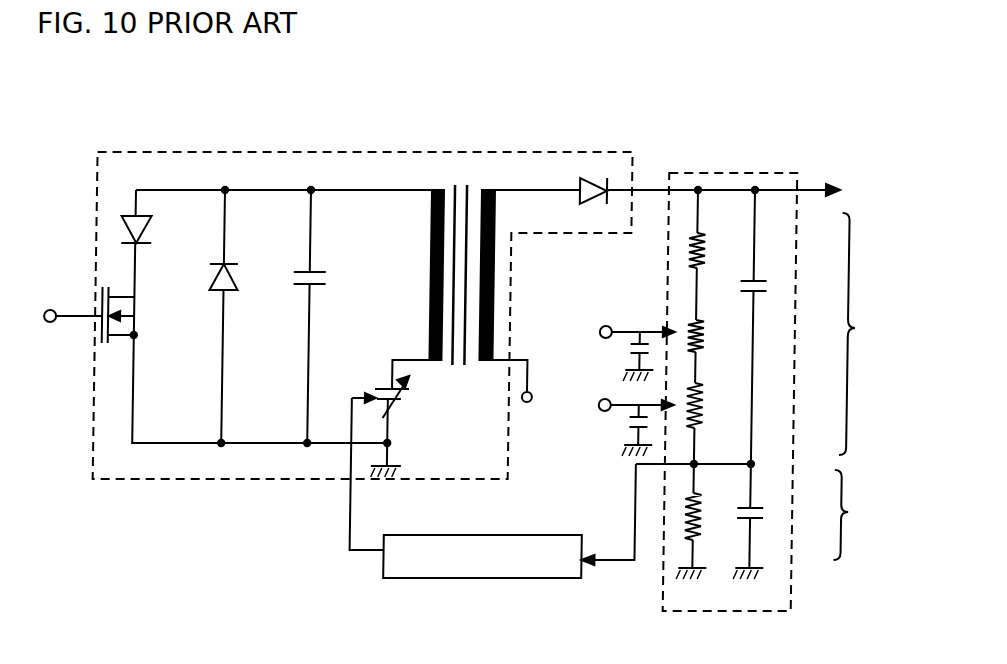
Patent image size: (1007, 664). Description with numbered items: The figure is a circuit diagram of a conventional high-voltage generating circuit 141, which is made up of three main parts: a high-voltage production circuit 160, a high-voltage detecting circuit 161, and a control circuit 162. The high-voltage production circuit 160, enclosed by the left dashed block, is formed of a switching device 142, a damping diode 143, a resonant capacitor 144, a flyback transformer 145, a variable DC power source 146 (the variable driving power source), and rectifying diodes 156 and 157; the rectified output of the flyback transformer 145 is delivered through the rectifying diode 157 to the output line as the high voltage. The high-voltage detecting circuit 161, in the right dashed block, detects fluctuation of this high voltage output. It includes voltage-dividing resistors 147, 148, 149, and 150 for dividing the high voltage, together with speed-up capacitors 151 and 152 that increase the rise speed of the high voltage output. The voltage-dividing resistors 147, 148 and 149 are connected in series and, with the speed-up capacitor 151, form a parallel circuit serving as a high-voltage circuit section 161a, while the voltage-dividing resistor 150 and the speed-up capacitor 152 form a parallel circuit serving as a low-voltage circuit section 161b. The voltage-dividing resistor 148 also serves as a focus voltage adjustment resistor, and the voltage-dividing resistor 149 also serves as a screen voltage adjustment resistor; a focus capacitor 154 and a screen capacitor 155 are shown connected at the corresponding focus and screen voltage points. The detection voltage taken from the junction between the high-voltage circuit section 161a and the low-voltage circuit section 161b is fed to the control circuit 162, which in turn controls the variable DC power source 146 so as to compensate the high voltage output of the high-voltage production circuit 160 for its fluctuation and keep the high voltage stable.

The high-voltage generating circuit 141 is at (95, 143).
The switching device 142 is at (122, 340).
The damping diode 143 is at (220, 294).
The resonant capacitor 144 is at (320, 271).
The flyback transformer 145 is at (495, 277).
The variable DC power source 146 is at (397, 402).
The voltage-dividing resistor 147 is at (692, 251).
The voltage-dividing resistor 148 is at (699, 321).
The voltage-dividing resistor 149 is at (702, 418).
The voltage-dividing resistor 150 is at (698, 538).
The speed-up capacitor 151 is at (758, 279).
The speed-up capacitor 152 is at (760, 506).
The focus capacitor 154 is at (636, 356).
The screen capacitor 155 is at (636, 431).
The rectifying diode 156 is at (146, 231).
The rectifying diode 157 is at (607, 188).
The high-voltage production circuit 160 is at (326, 152).
The high-voltage detecting circuit 161 is at (706, 173).
The high-voltage circuit section 161a is at (879, 334).
The low-voltage circuit section 161b is at (874, 515).
The control circuit 162 is at (490, 578).